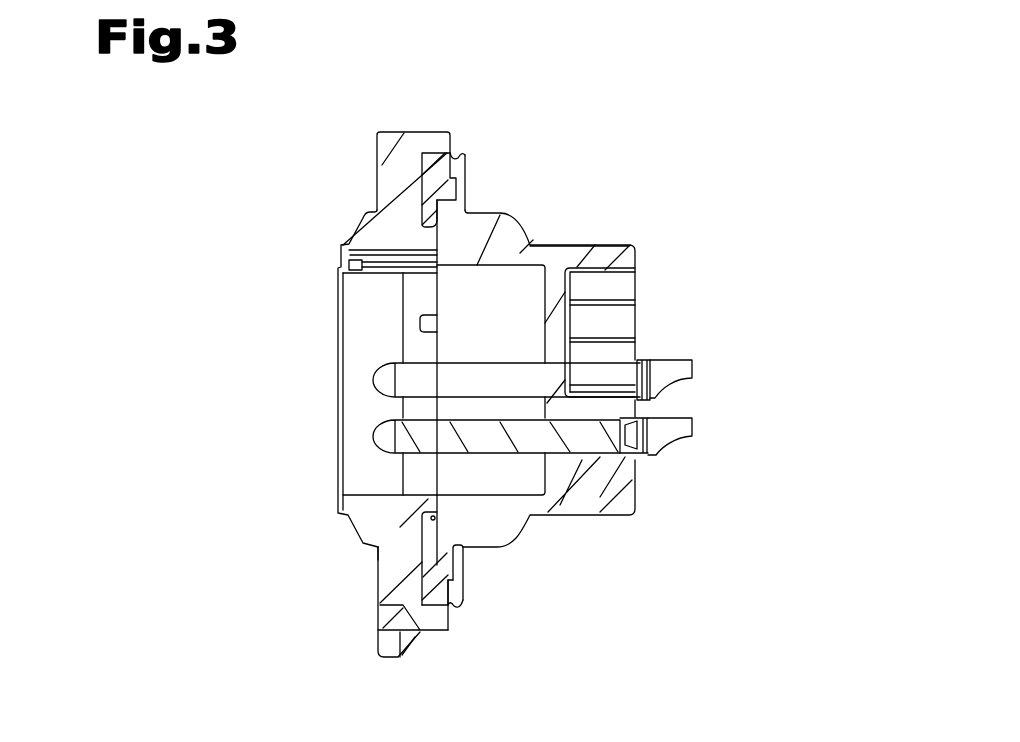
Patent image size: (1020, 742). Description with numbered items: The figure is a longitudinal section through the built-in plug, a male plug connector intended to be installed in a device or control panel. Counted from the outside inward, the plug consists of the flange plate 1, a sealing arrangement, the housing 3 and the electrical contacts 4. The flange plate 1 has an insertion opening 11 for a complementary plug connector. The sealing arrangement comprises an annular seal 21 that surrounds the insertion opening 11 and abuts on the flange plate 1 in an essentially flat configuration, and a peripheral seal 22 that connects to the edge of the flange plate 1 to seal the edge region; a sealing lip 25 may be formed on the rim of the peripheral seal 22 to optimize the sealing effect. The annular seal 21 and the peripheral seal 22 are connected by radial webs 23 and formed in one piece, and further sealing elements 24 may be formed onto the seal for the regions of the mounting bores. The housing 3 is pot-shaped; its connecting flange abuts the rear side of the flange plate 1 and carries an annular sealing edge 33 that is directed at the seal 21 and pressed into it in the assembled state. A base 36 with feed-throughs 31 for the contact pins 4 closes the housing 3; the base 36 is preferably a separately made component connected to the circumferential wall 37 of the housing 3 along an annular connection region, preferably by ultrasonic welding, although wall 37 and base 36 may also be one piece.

The flange plate 1 is at (377, 140).
The housing 3 is at (507, 237).
The electrical contacts 4 is at (520, 383).
The insertion opening 11 is at (316, 388).
The annular seal 21 is at (427, 210).
The peripheral seal 22 is at (441, 161).
The radial webs 23 is at (430, 182).
The sealing elements 24 is at (430, 533).
The sealing lip 25 is at (467, 152).
The feed-throughs 31 is at (612, 465).
The annular sealing edge 33 is at (463, 187).
The base 36 is at (553, 346).
The circumferential wall 37 is at (548, 244).